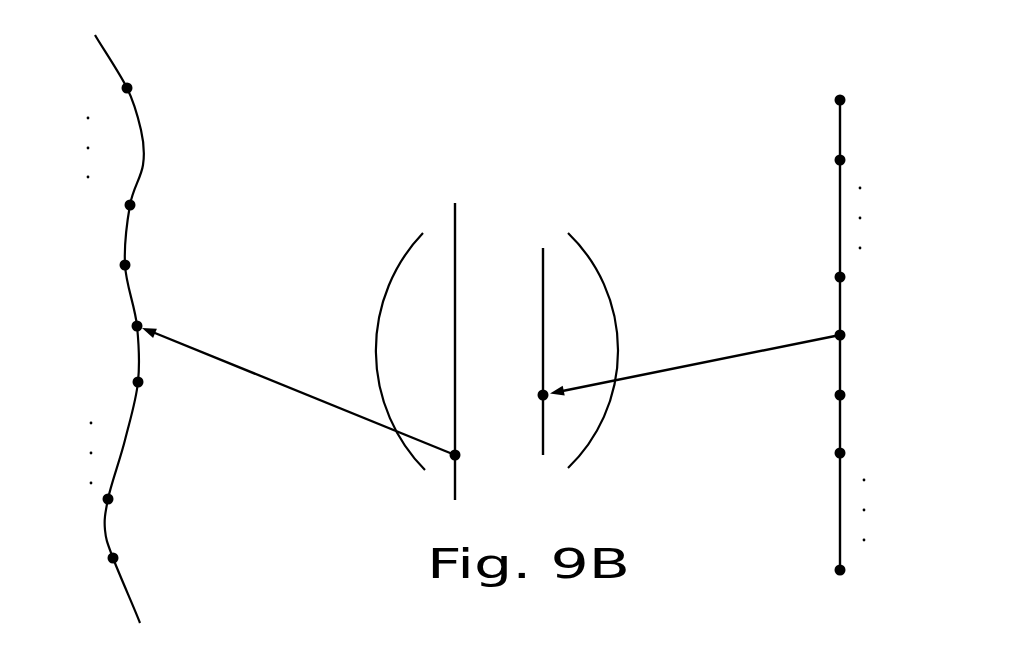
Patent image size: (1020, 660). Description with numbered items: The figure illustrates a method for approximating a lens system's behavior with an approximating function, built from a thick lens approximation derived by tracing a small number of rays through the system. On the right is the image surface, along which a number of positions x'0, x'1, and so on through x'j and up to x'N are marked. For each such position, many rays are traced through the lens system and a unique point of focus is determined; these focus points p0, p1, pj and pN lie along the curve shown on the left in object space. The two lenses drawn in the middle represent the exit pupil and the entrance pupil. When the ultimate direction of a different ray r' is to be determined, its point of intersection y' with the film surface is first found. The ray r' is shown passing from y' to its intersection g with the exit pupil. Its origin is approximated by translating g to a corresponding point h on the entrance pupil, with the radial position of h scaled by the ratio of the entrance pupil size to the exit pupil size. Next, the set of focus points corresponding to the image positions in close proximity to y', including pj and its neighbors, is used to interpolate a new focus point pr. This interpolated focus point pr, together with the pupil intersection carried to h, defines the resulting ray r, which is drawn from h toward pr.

The focus point pN is at (101, 80).
The interpolated focus point pr is at (106, 330).
The focus point pj is at (107, 388).
The focus point p1 is at (92, 506).
The focus point p0 is at (97, 564).
The image surface position x'0 is at (866, 103).
The image surface position x'1 is at (865, 163).
The image surface position x'j is at (863, 279).
The intersection point with film surface y' is at (860, 334).
The image surface position x'N is at (868, 573).
The entrance pupil point h is at (465, 444).
The exit pupil intersection g is at (531, 384).
The resulting ray r is at (298, 391).
The incoming ray r' is at (695, 368).